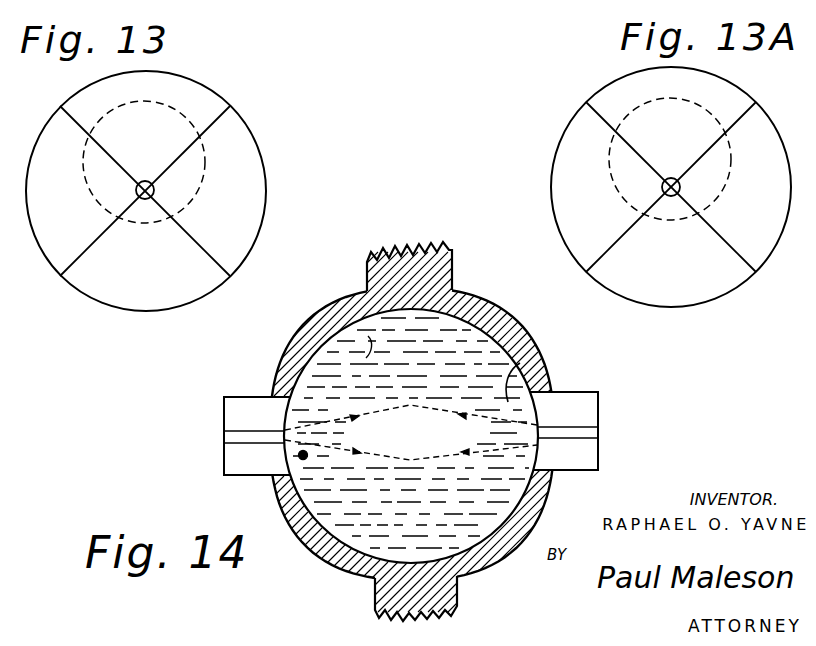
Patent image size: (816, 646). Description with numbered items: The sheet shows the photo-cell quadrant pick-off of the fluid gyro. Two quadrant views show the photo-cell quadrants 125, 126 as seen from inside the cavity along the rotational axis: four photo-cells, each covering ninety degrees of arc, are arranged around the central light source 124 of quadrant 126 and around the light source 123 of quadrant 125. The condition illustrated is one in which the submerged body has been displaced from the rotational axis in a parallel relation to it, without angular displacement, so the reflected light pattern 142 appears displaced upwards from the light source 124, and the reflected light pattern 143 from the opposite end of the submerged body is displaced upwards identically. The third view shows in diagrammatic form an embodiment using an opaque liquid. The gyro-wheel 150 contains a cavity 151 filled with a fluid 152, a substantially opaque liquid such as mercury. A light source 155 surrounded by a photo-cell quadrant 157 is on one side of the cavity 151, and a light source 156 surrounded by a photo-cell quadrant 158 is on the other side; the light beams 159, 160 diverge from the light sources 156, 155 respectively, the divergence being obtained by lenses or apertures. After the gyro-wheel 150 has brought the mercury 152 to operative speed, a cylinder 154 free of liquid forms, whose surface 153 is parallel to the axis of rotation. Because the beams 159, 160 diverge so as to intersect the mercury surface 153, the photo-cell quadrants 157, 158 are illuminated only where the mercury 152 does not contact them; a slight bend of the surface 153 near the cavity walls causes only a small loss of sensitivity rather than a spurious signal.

In FIG. 13A, the light source 123 is at (669, 198).
In FIG. 13, the light source 124 is at (143, 200).
In FIG. 13A, the photo-cell quadrant 125 is at (574, 115).
In FIG. 13, the photo-cell quadrant 126 is at (253, 137).
In FIG. 13, the reflected light pattern 142 is at (205, 170).
In FIG. 13A, the reflected light pattern 143 is at (609, 157).
In FIG. 14, the gyro-wheel 150 is at (452, 265).
In FIG. 14, the cavity 151 is at (510, 313).
In FIG. 14, the fluid 152 is at (370, 345).
In FIG. 14, the surface 153 is at (550, 360).
In FIG. 14, the cylinder 154 is at (303, 460).
In FIG. 14, the light source 155 is at (597, 432).
In FIG. 14, the light source 156 is at (250, 430).
In FIG. 14, the photo-cell quadrant 157 is at (593, 402).
In FIG. 14, the photo-cell quadrant 158 is at (227, 457).
In FIG. 14, the light beam 159 is at (335, 421).
In FIG. 14, the light beam 160 is at (494, 446).